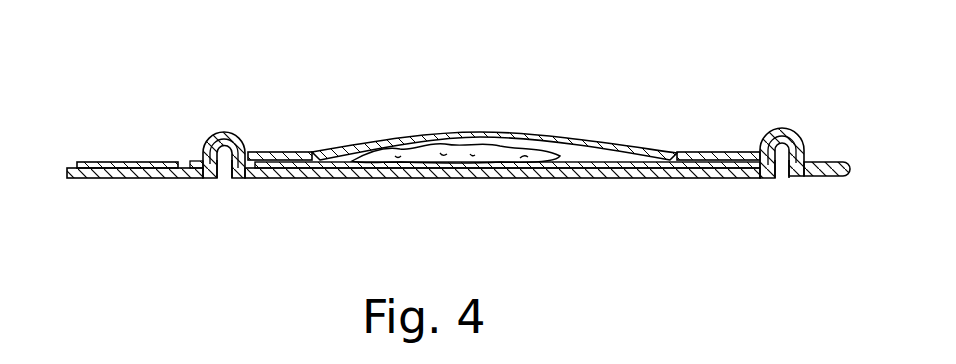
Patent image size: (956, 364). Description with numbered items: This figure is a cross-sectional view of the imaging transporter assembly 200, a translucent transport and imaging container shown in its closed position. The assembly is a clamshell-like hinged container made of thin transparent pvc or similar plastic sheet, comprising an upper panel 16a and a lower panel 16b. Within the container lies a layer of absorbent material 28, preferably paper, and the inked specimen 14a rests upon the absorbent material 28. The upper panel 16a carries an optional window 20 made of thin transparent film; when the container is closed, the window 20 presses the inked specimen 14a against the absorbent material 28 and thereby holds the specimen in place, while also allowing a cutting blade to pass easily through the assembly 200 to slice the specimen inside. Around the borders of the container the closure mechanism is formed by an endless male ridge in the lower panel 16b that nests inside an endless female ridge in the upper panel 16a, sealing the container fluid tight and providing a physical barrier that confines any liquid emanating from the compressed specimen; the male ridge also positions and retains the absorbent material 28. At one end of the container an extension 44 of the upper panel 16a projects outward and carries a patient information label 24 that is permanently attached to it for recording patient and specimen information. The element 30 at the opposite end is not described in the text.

The imaging transporter assembly 200 is at (422, 86).
The inked specimen 14a is at (498, 152).
The upper panel 16a is at (693, 152).
The lower panel 16b is at (624, 176).
The window 20 is at (412, 138).
The patient information label 24 is at (128, 162).
The absorbent material 28 is at (583, 165).
The right flange 30 is at (847, 163).
The extension 44 is at (84, 172).